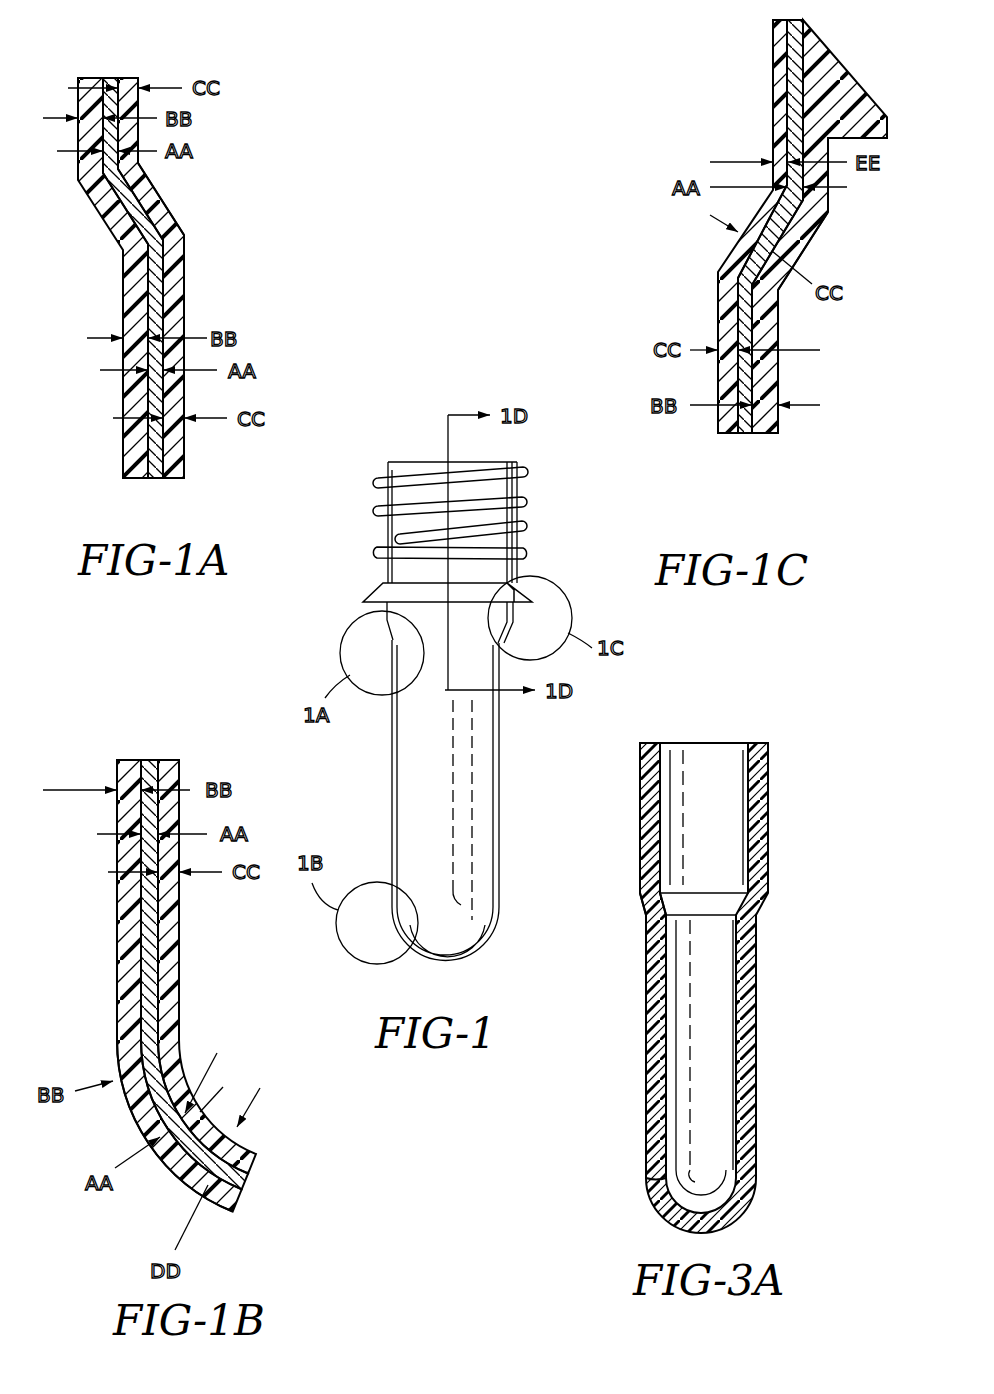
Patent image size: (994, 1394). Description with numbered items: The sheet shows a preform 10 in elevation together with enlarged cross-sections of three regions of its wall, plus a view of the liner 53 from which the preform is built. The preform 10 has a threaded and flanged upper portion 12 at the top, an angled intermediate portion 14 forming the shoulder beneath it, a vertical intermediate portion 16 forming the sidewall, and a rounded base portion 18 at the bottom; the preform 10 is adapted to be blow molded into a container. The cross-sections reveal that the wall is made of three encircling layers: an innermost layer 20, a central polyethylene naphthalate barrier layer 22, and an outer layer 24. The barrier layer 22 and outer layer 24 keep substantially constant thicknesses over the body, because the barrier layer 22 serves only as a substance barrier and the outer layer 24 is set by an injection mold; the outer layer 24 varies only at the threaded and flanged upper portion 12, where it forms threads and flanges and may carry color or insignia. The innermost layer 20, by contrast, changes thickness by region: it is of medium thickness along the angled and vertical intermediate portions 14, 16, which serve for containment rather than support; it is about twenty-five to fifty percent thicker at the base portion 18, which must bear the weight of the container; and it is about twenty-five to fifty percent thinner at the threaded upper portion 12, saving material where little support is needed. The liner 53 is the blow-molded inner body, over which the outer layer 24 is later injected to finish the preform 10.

In FIG. 1, the preform 10 is at (439, 668).
In FIG. 1C, the threaded and flanged upper portion 12 is at (773, 85).
In FIG. 1, the threaded and flanged upper portion 12 is at (515, 540).
In FIG. 1A, the angled intermediate portion 14 is at (176, 226).
In FIG. 1C, the angled intermediate portion 14 is at (822, 213).
In FIG. 1, the angled intermediate portion 14 is at (345, 633).
In FIG. 1A, the vertical intermediate portion 16 is at (186, 472).
In FIG. 1C, the vertical intermediate portion 16 is at (782, 318).
In FIG. 1, the vertical intermediate portion 16 is at (503, 757).
In FIG. 1B, the vertical intermediate portion 16 is at (180, 973).
In FIG. 1, the base portion 18 is at (487, 943).
In FIG. 1B, the base portion 18 is at (173, 1172).
In FIG. 1A, the innermost layer 20 is at (130, 78).
In FIG. 1C, the innermost layer 20 is at (722, 440).
In FIG. 1B, the innermost layer 20 is at (258, 1163).
In FIG. 3A, the innermost layer 20 is at (662, 765).
In FIG. 1A, the polyethylene naphthalate barrier layer 22 is at (112, 78).
In FIG. 1C, the polyethylene naphthalate barrier layer 22 is at (745, 440).
In FIG. 1B, the polyethylene naphthalate barrier layer 22 is at (253, 1185).
In FIG. 1A, the outer layer 24 is at (88, 78).
In FIG. 1C, the outer layer 24 is at (765, 440).
In FIG. 1B, the outer layer 24 is at (246, 1208).
In FIG. 3A, the liner 53 is at (770, 796).